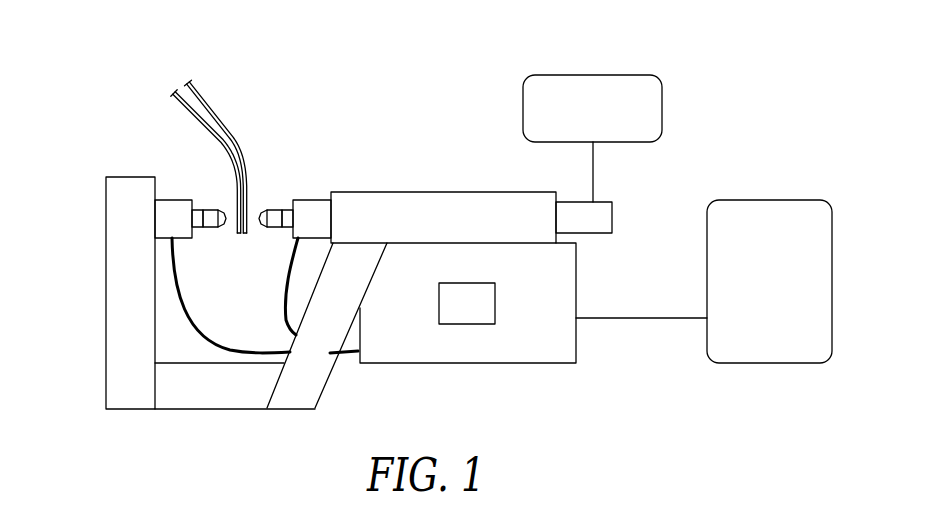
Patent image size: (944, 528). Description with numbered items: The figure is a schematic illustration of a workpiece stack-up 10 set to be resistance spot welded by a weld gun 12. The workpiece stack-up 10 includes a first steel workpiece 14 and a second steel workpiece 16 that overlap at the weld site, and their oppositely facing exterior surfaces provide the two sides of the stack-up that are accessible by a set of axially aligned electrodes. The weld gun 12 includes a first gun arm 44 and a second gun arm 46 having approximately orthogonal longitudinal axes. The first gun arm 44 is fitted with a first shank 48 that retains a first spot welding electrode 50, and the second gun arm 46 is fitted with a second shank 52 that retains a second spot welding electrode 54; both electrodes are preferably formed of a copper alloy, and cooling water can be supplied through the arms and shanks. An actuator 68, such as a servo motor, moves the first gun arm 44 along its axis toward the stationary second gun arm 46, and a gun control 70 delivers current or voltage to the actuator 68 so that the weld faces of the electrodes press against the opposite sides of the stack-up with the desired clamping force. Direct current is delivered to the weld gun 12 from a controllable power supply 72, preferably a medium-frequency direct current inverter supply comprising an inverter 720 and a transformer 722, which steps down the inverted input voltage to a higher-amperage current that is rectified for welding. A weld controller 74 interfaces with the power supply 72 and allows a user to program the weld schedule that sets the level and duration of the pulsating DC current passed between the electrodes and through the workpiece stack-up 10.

The workpiece stack-up 10 is at (436, 219).
The weld gun 12 is at (424, 174).
The first steel workpiece 14 is at (216, 106).
The second steel workpiece 16 is at (190, 110).
The first gun arm 44 is at (447, 201).
The second gun arm 46 is at (117, 243).
The first shank 48 is at (290, 165).
The first spot welding electrode 50 is at (262, 206).
The second shank 52 is at (191, 229).
The second spot welding electrode 54 is at (214, 230).
The actuator 68 is at (600, 218).
The gun control 70 is at (595, 86).
The power supply 72 is at (590, 341).
The weld controller 74 is at (456, 315).
The inverter 720 is at (774, 343).
The MFDC transformer 722 is at (468, 333).